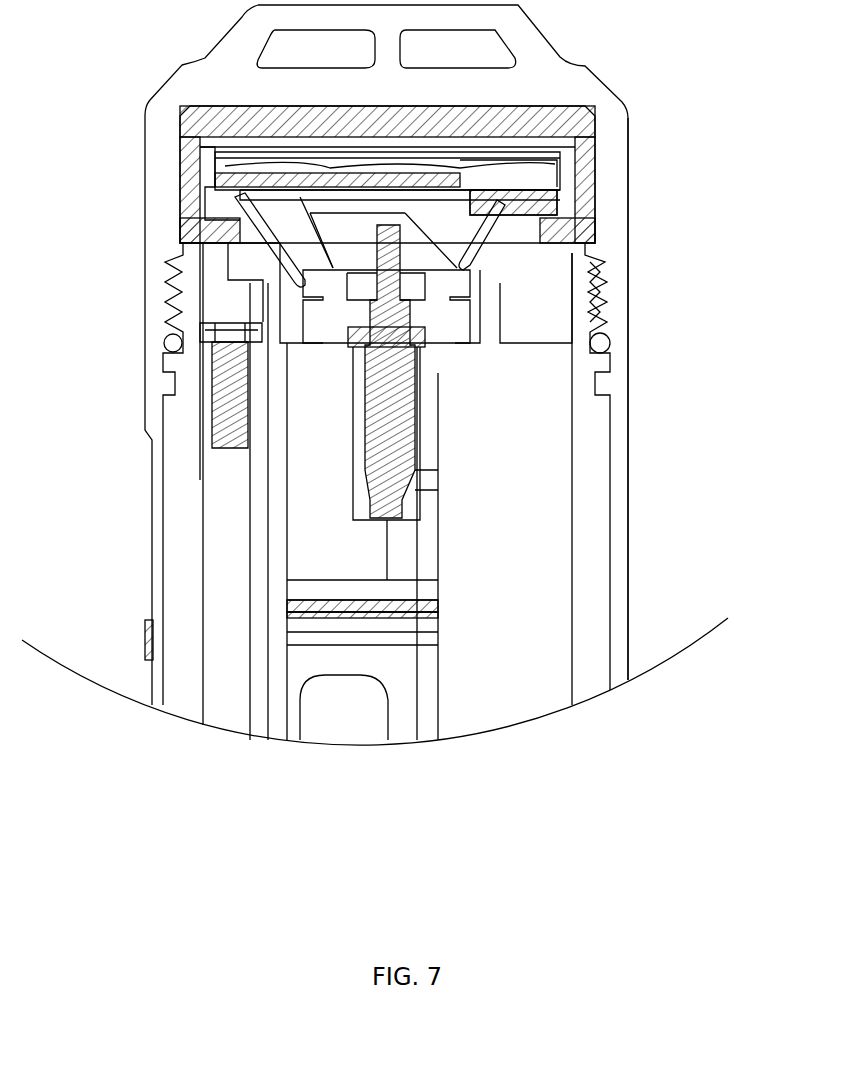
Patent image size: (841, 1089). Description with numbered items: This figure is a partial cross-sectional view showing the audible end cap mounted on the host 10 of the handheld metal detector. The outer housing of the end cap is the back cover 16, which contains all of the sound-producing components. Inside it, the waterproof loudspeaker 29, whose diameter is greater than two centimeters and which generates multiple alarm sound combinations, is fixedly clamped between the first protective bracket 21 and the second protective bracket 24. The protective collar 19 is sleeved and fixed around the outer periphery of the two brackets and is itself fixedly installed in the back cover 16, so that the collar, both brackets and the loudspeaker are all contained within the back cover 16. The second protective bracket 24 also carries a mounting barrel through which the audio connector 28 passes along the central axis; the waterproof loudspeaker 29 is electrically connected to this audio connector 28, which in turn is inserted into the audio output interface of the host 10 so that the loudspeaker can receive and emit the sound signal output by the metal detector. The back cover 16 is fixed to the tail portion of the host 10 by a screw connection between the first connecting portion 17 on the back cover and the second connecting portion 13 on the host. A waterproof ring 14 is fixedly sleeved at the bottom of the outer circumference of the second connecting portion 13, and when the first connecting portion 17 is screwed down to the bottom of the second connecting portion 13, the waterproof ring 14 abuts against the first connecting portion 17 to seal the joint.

The host 10 is at (685, 482).
The second connecting portion 13 is at (670, 306).
The waterproof ring 14 is at (675, 353).
The back cover 16 is at (650, 83).
The first connecting portion 17 is at (675, 258).
The protective collar 19 is at (200, 114).
The first protective bracket 21 is at (205, 150).
The second protective bracket 24 is at (215, 205).
The audio connector 28 is at (680, 395).
The waterproof loudspeaker 29 is at (680, 158).